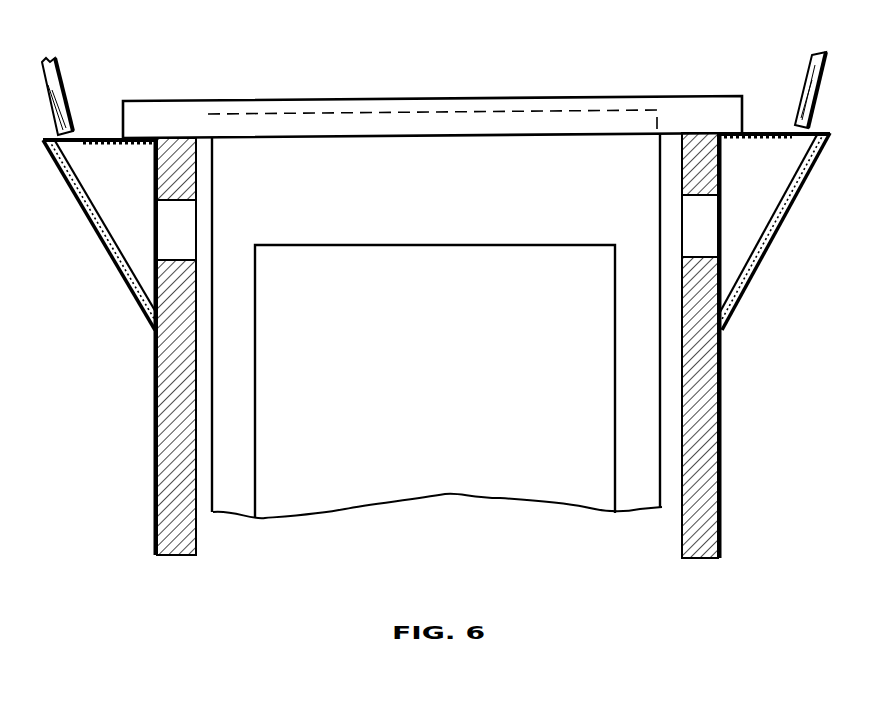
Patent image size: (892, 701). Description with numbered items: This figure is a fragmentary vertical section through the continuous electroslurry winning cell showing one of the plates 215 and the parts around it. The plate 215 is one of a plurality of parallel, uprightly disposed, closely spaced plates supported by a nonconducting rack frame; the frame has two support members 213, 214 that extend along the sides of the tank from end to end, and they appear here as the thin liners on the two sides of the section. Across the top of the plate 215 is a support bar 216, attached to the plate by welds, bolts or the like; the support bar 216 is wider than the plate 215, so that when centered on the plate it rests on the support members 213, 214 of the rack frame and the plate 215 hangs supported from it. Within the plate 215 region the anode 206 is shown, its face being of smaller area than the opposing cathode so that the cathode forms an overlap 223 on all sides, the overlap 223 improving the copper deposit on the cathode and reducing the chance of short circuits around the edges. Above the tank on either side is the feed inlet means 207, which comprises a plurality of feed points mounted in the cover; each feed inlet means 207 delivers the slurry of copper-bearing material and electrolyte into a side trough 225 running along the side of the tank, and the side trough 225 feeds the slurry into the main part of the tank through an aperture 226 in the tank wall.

The anode 206 is at (437, 408).
The feed inlet means 207 is at (62, 80).
The support member 213 is at (155, 160).
The support member 214 is at (722, 163).
The plate 215 is at (436, 322).
The support bar 216 is at (576, 97).
The overlap 223 is at (437, 369).
The side trough 225 is at (436, 231).
The aperture 226 is at (439, 345).